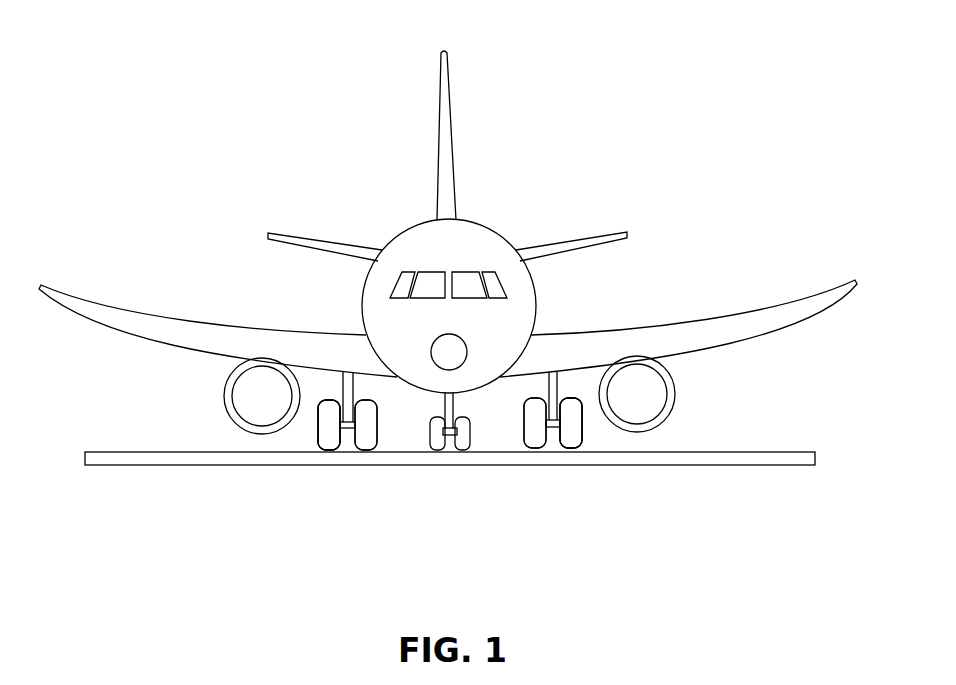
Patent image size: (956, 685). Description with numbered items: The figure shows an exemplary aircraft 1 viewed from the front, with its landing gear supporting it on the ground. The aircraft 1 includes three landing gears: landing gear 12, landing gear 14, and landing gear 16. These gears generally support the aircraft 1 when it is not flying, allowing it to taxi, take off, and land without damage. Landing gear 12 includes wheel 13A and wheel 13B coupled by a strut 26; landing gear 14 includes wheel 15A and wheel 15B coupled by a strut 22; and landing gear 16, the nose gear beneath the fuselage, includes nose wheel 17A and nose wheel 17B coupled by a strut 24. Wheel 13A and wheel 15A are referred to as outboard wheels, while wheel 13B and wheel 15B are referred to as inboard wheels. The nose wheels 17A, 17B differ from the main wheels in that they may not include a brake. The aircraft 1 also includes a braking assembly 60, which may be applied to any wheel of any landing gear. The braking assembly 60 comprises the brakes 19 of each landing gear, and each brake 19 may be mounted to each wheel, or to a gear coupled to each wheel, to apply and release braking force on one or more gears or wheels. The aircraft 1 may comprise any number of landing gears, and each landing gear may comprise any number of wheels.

The aircraft 1 is at (293, 140).
The landing gear 12 is at (592, 434).
The wheel 13A is at (600, 442).
The wheel 13B is at (537, 419).
The landing gear 14 is at (307, 434).
The wheel 15A is at (319, 447).
The wheel 15B is at (375, 450).
The landing gear 16 is at (473, 418).
The nose wheel 17A is at (470, 445).
The nose wheel 17B is at (433, 450).
The brake 19 is at (361, 419).
The strut 22 is at (346, 430).
The strut 24 is at (449, 434).
The strut 26 is at (553, 428).
The braking assembly 60 is at (328, 395).